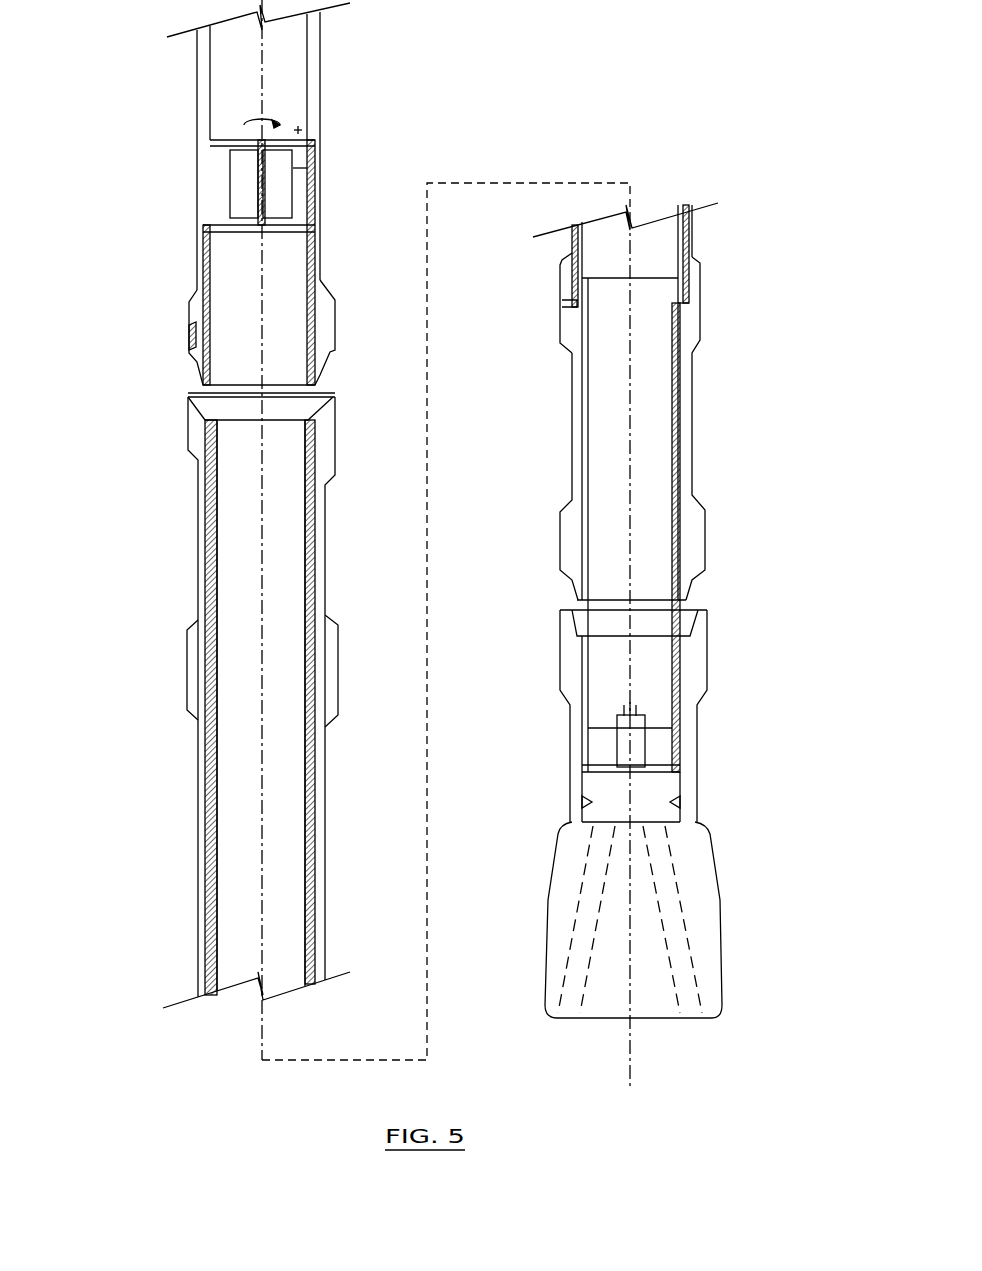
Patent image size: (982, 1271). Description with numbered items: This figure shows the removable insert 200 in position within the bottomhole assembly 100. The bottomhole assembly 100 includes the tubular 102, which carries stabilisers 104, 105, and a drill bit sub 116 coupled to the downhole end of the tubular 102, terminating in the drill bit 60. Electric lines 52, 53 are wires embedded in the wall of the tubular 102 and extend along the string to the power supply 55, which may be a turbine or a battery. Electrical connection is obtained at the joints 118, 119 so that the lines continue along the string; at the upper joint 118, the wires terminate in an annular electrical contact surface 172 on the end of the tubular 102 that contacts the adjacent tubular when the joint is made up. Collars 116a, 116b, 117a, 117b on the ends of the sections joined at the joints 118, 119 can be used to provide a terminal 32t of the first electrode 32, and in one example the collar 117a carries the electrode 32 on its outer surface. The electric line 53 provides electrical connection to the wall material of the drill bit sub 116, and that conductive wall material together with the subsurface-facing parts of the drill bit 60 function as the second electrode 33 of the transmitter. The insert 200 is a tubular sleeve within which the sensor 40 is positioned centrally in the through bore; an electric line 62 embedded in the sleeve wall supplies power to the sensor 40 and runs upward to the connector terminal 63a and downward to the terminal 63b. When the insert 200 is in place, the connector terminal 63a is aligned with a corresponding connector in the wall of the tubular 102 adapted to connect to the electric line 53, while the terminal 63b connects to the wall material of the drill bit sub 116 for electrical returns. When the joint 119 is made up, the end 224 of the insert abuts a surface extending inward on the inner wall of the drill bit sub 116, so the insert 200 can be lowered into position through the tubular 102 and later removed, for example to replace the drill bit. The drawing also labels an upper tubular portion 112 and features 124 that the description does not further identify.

The bottomhole assembly 100 is at (112, 440).
The upper tubular housing 112 is at (197, 115).
The power supply 55 is at (293, 168).
The electric line 52 is at (193, 300).
The electric line 53 is at (318, 305).
The collar 116a is at (189, 333).
The joint 118 is at (342, 378).
The annular electrical contact surface 172 is at (196, 400).
The collar 116b is at (336, 448).
The tubular 102 is at (198, 540).
The stabiliser 105 is at (197, 718).
The connector terminal 63a is at (676, 292).
The electrode 32 is at (560, 305).
The terminal 32t is at (560, 312).
The stabiliser 104 is at (700, 345).
The insert 200 is at (582, 392).
The electric line 62 is at (680, 445).
The collar 117a is at (560, 545).
The joint 119 is at (718, 588).
The collar 117b is at (560, 618).
The drill bit sub 116 is at (697, 710).
The terminal 63b is at (640, 718).
The sensor 40 is at (630, 750).
The end of the insert 224 is at (670, 780).
The retaining pins 124 is at (585, 802).
The drill bit 60 is at (675, 920).
The second electrode 33 is at (716, 877).